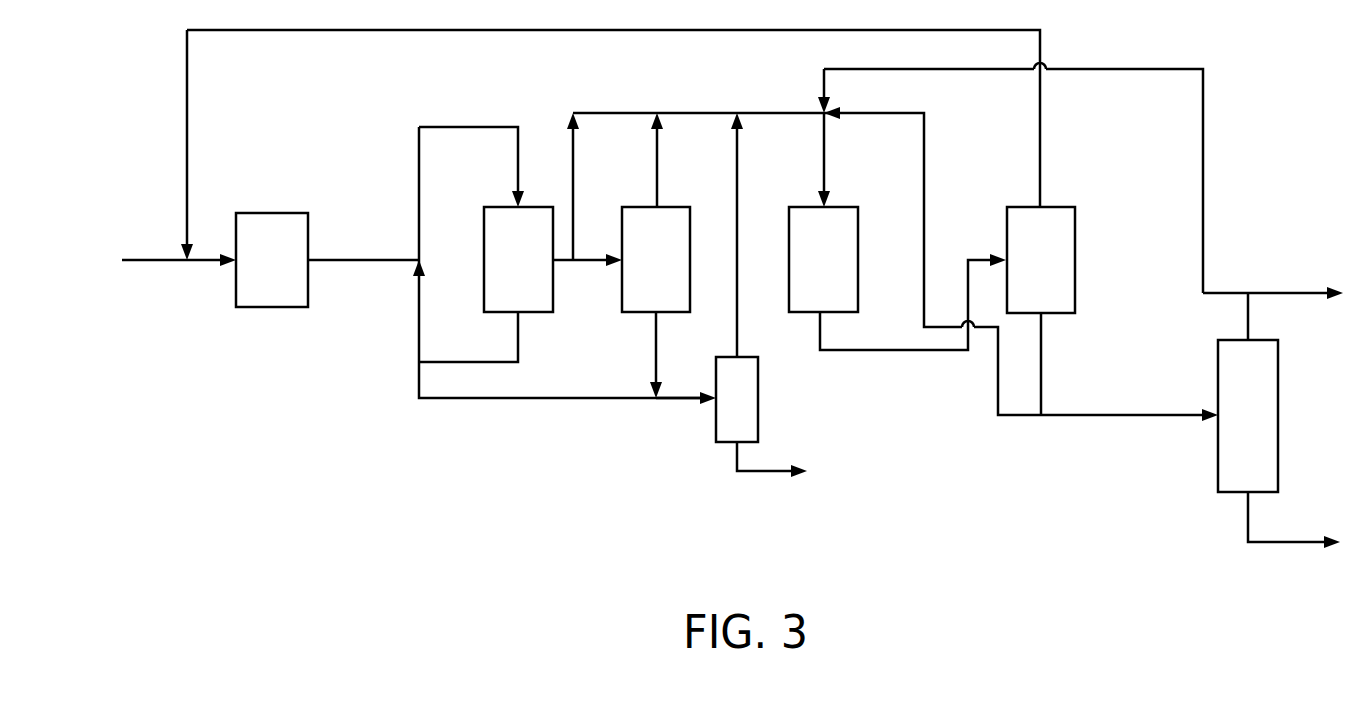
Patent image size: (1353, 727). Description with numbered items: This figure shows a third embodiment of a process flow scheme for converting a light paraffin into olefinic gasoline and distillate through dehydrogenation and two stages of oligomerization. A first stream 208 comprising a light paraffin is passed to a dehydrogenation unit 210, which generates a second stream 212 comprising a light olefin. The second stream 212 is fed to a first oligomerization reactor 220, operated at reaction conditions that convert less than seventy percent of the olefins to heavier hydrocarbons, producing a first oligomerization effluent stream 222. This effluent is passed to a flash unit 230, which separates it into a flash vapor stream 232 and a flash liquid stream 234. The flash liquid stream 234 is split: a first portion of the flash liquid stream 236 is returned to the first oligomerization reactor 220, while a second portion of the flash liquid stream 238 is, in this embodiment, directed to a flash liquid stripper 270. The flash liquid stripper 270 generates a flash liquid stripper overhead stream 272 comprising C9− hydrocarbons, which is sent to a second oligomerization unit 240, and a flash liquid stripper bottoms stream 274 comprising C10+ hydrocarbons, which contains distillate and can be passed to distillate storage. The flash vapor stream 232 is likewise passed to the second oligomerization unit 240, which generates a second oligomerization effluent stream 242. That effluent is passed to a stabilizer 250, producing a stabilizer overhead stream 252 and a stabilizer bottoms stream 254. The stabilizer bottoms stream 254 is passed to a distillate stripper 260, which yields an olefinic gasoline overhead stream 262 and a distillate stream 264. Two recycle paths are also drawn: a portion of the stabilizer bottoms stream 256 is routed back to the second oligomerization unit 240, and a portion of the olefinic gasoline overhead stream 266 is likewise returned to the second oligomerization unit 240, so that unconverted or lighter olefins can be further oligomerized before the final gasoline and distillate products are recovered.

The first stream 208 is at (162, 258).
The dehydrogenation unit 210 is at (277, 213).
The second stream 212 is at (342, 260).
The first oligomerization reactor 220 is at (502, 207).
The first oligomerization effluent stream 222 is at (518, 362).
The flash unit 230 is at (663, 207).
The flash vapor stream 232 is at (656, 195).
The flash liquid stream 234 is at (656, 353).
The first portion of the flash liquid stream 236 is at (419, 397).
The second portion of the flash liquid stream 238 is at (671, 400).
The second oligomerization unit 240 is at (826, 166).
The second oligomerization effluent stream 242 is at (896, 350).
The stabilizer 250 is at (1060, 207).
The stabilizer overhead stream 252 is at (986, 30).
The stabilizer bottoms stream 254 is at (1041, 368).
The portion of the stabilizer bottoms stream 256 is at (905, 113).
The distillate stripper 260 is at (1265, 340).
The olefinic gasoline overhead stream 262 is at (1284, 293).
The distillate stream 264 is at (1246, 542).
The portion of the olefinic gasoline overhead stream 266 is at (1192, 69).
The flash liquid stripper 270 is at (758, 357).
The flash liquid stripper overhead stream 272 is at (737, 178).
The flash liquid stripper bottoms stream 274 is at (735, 471).